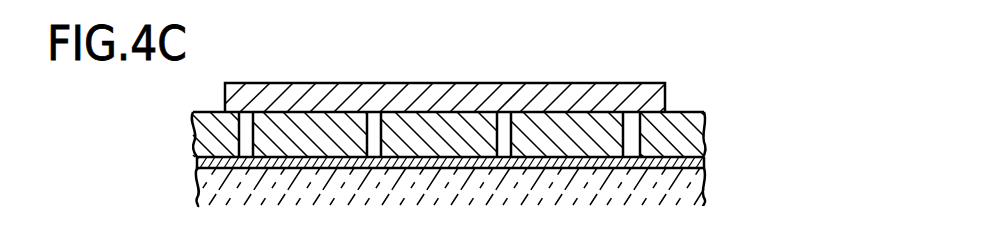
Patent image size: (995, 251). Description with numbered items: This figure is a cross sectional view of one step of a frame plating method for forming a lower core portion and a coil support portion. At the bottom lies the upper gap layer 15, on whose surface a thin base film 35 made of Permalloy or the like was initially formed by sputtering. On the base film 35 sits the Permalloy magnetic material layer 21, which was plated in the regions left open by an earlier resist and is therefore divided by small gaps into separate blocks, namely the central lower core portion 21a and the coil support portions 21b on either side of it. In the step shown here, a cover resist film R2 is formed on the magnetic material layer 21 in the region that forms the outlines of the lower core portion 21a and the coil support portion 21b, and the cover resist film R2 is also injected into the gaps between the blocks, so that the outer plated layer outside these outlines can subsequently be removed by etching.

The cover resist film R2 is at (447, 100).
The base film 35 is at (200, 160).
The magnetic material layer 21 is at (692, 90).
The lower core portion 21a is at (442, 143).
The coil support portion 21b is at (312, 140).
The upper gap layer 15 is at (218, 190).